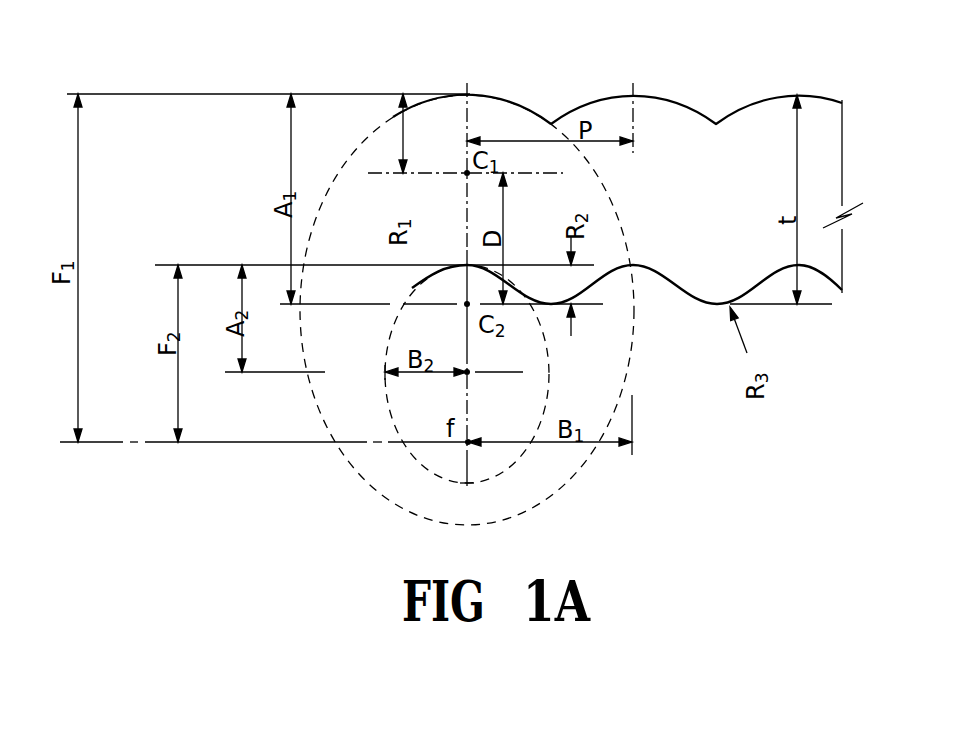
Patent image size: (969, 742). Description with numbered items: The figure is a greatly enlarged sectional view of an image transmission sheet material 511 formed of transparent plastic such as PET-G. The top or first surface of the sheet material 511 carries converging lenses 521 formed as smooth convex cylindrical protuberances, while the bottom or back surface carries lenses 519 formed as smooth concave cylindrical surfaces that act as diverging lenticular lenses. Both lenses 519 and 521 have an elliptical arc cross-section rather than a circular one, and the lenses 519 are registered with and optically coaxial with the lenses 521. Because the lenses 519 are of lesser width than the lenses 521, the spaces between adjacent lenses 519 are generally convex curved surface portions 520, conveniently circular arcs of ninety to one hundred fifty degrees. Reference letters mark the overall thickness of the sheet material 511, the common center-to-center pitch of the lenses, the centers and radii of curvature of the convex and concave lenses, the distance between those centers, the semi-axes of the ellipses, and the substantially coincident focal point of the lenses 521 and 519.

The sheet material 511 is at (703, 65).
The lenses 519 is at (677, 279).
The convex curved surface portions 520 is at (713, 306).
The converging lenses 521 is at (543, 67).